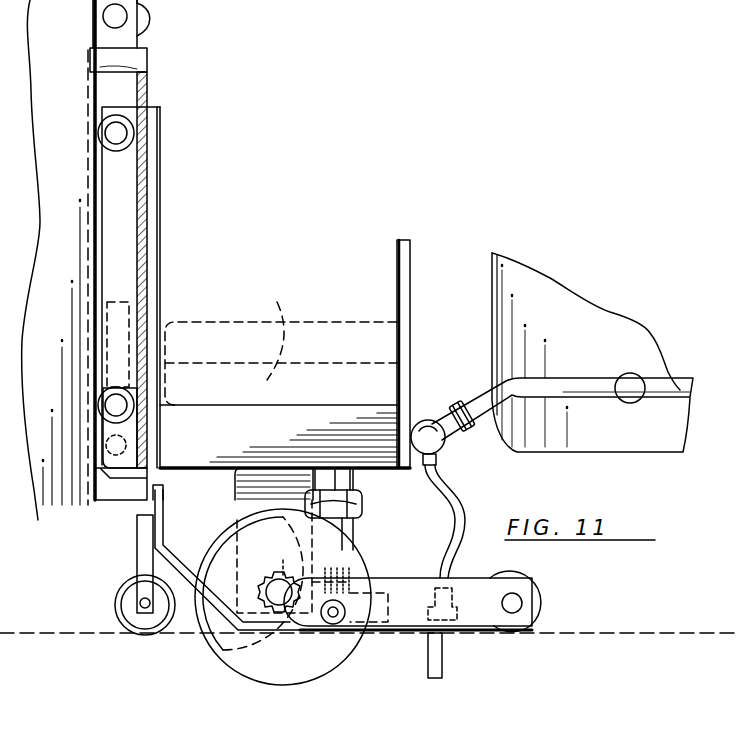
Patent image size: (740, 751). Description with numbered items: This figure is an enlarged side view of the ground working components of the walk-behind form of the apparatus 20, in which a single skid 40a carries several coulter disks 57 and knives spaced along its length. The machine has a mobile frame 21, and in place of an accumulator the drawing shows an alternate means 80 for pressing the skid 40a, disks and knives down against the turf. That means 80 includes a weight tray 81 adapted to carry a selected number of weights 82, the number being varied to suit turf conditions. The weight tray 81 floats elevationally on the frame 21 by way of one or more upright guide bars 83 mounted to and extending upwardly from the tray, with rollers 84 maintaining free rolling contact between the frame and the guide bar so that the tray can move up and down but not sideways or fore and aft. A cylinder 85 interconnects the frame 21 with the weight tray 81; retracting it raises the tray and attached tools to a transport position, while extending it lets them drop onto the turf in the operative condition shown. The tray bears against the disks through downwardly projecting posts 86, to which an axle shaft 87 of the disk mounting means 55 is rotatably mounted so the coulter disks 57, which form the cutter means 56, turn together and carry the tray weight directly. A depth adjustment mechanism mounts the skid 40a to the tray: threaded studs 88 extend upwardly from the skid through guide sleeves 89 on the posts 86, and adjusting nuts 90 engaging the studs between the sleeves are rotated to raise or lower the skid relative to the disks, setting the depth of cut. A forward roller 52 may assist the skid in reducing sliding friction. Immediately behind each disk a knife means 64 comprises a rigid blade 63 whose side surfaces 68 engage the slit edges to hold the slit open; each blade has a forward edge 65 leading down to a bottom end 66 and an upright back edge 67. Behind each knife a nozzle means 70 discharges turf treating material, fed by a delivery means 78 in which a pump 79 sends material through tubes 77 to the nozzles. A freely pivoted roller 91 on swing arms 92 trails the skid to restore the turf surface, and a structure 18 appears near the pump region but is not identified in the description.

The apparatus 20 is at (492, 196).
The cylinder 85 is at (138, 57).
The rollers 84 is at (128, 137).
The mobile frame 21 is at (142, 183).
The upright guide bars 83 is at (160, 236).
The weights 82 is at (277, 302).
The means for pressing 80 is at (339, 320).
The weight tray 81 is at (232, 392).
The downwardly projecting posts 86 is at (247, 490).
The guide sleeves 89 is at (354, 480).
The adjusting nuts 90 is at (356, 505).
The threaded studs 88 is at (362, 590).
The axle shaft 87 is at (270, 590).
The mounting means 55 is at (285, 572).
The forward roller 52 is at (122, 605).
The coulter disks 57 is at (228, 645).
The cutter means 56 is at (251, 677).
The skid 40a is at (312, 636).
The nozzle means 70 is at (452, 594).
The delivery means 78 is at (588, 380).
The tubes 77 is at (577, 395).
The pump 79 is at (633, 403).
The side panel 18 is at (591, 352).
The freely pivoted roller 91 is at (548, 605).
The swing arms 92 is at (525, 636).
The knife means 64 is at (446, 648).
The back edge 67 is at (447, 665).
The bottom end 66 is at (433, 680).
The side surfaces 68 is at (422, 640).
The rigid blade 63 is at (420, 650).
The forward edge 65 is at (428, 660).